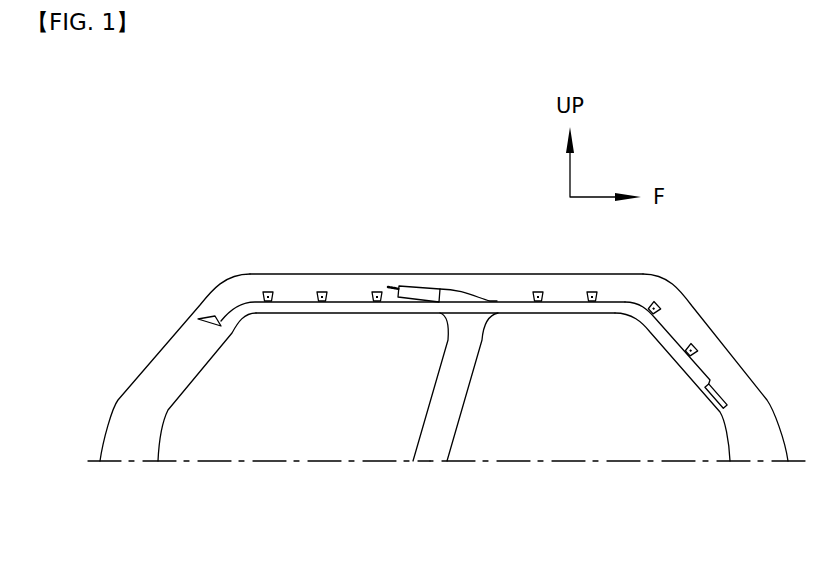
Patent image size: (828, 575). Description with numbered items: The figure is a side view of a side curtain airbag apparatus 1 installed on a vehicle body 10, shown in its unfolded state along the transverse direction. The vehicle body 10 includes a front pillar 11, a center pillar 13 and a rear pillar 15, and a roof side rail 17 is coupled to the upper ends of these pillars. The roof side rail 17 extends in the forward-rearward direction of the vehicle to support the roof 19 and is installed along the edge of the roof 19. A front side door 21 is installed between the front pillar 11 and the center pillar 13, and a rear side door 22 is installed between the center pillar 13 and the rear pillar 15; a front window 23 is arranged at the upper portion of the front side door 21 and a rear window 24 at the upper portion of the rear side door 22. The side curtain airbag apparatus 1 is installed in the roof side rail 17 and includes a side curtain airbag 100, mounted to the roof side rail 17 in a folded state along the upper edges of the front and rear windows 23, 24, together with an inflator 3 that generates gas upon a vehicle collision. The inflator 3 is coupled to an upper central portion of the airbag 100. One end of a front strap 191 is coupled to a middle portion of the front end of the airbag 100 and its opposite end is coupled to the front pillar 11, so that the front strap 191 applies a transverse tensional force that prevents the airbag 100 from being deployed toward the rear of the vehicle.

The side curtain airbag apparatus 1 is at (504, 283).
The inflator 3 is at (423, 290).
The vehicle body 10 is at (168, 298).
The front pillar 11 is at (703, 338).
The center pillar 13 is at (432, 450).
The rear pillar 15 is at (148, 387).
The roof side rail 17 is at (352, 290).
The roof 19 is at (280, 272).
The front side door 21 is at (618, 463).
The rear side door 22 is at (191, 463).
The front window 23 is at (570, 403).
The rear window 24 is at (289, 403).
The side curtain airbag 100 is at (643, 322).
The front strap 191 is at (720, 392).